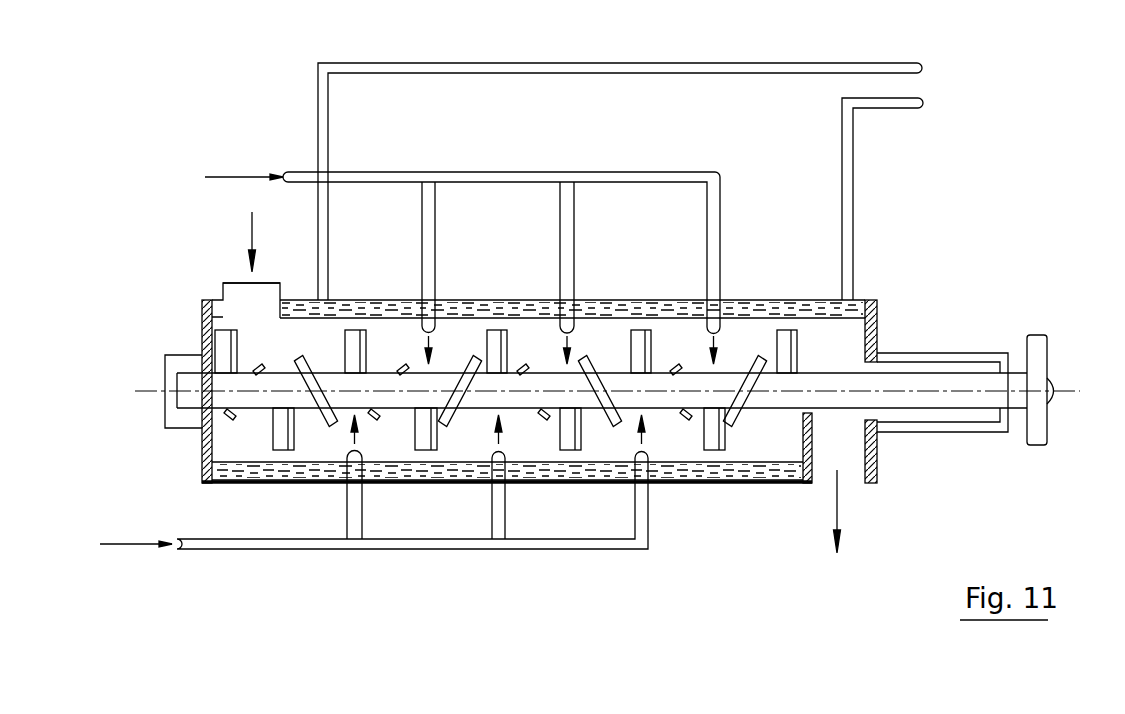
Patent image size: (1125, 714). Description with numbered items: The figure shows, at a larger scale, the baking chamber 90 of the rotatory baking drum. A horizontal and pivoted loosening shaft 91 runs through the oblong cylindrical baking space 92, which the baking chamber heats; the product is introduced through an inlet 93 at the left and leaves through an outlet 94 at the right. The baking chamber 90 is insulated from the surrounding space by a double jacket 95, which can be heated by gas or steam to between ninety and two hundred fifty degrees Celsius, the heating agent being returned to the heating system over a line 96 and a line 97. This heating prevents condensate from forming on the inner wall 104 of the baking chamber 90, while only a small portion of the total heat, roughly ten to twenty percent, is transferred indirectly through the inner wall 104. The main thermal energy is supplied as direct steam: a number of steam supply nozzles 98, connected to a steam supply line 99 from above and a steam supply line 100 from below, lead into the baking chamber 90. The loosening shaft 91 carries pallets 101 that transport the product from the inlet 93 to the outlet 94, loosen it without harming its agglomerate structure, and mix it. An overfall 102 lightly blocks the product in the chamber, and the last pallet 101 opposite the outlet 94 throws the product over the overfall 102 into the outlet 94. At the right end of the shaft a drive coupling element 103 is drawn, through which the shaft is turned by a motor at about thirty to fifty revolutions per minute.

The baking chamber 90 is at (877, 328).
The loosening shaft 91 is at (768, 400).
The baking space 92 is at (827, 347).
The inlet 93 is at (240, 282).
The outlet 94 is at (853, 455).
The double jacket 95 is at (682, 470).
The line 96 is at (817, 68).
The line 97 is at (847, 175).
The steam supply nozzles 98 is at (565, 322).
The steam supply line 99 is at (308, 177).
The steam supply line 100 is at (200, 549).
The pallets 101 is at (428, 432).
The overfall 102 is at (805, 483).
The coupling disc 103 is at (1035, 365).
The inner wall 104 is at (764, 315).